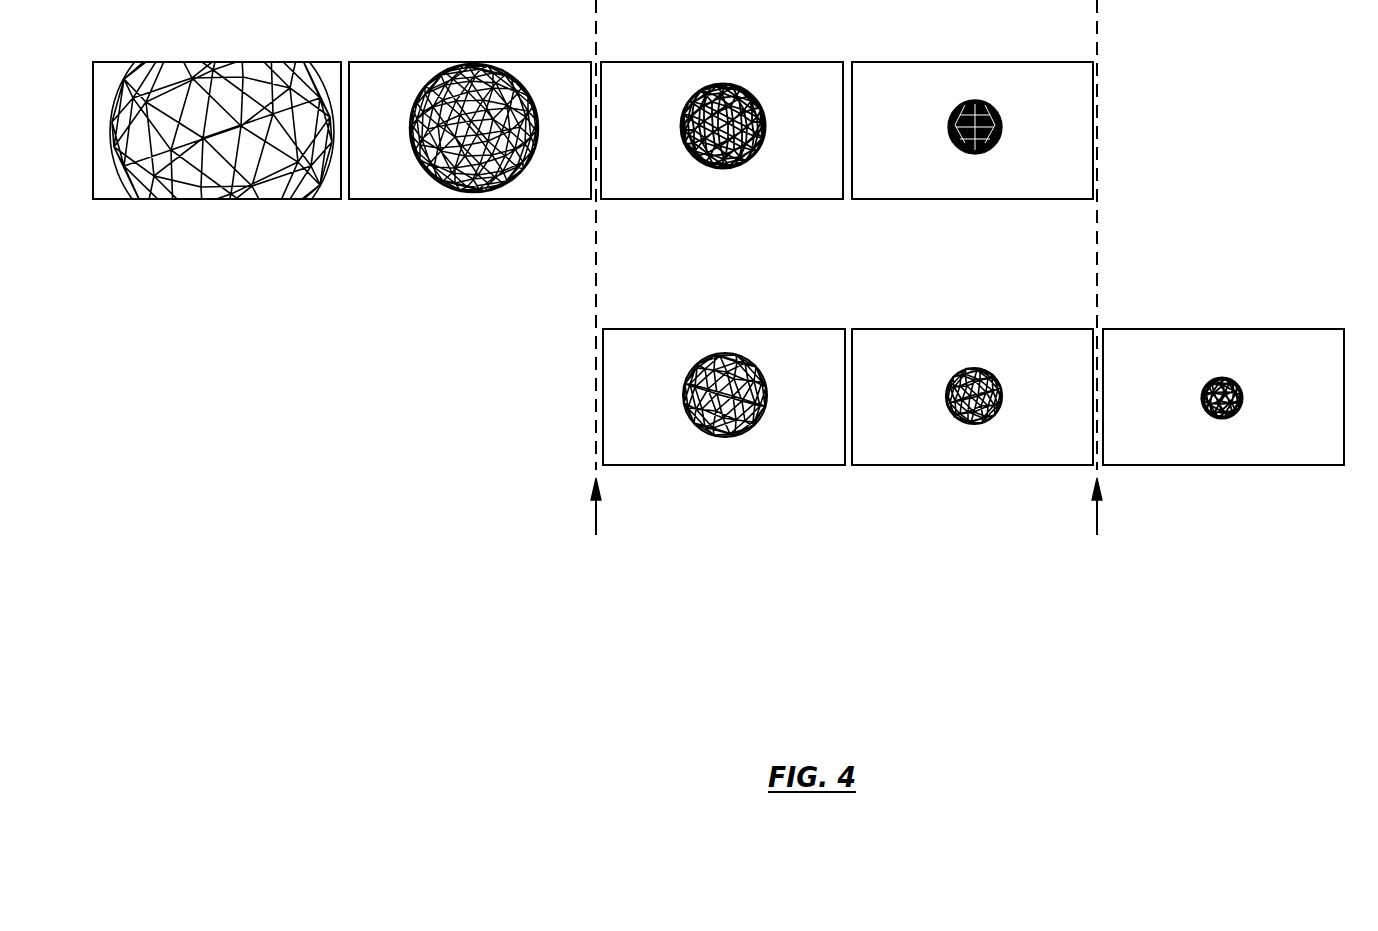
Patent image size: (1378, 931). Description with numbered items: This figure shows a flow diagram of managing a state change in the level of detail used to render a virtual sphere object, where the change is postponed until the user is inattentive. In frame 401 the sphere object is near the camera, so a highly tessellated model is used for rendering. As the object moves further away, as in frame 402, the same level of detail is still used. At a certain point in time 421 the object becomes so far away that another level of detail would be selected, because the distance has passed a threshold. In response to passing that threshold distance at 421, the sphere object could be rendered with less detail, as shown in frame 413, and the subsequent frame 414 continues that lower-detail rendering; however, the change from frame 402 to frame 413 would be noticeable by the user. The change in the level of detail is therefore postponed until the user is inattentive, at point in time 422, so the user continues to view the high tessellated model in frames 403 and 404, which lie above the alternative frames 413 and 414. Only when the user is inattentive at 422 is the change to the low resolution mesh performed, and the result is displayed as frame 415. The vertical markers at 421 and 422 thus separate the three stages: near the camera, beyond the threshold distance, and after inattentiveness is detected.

The frame with sphere object near the camera 401 is at (222, 53).
The frame with sphere object further away 402 is at (470, 53).
The frame continuing high tessellated model 403 is at (730, 53).
The frame continuing high tessellated model 404 is at (973, 53).
The frame with less detailed sphere object 413 is at (730, 316).
The virtual object displayed in reduced state 414 is at (978, 316).
The frame with low resolution mesh 415 is at (1227, 316).
The point in time of passing threshold distance 421 is at (588, 505).
The point in time of user inattentiveness 422 is at (1109, 505).